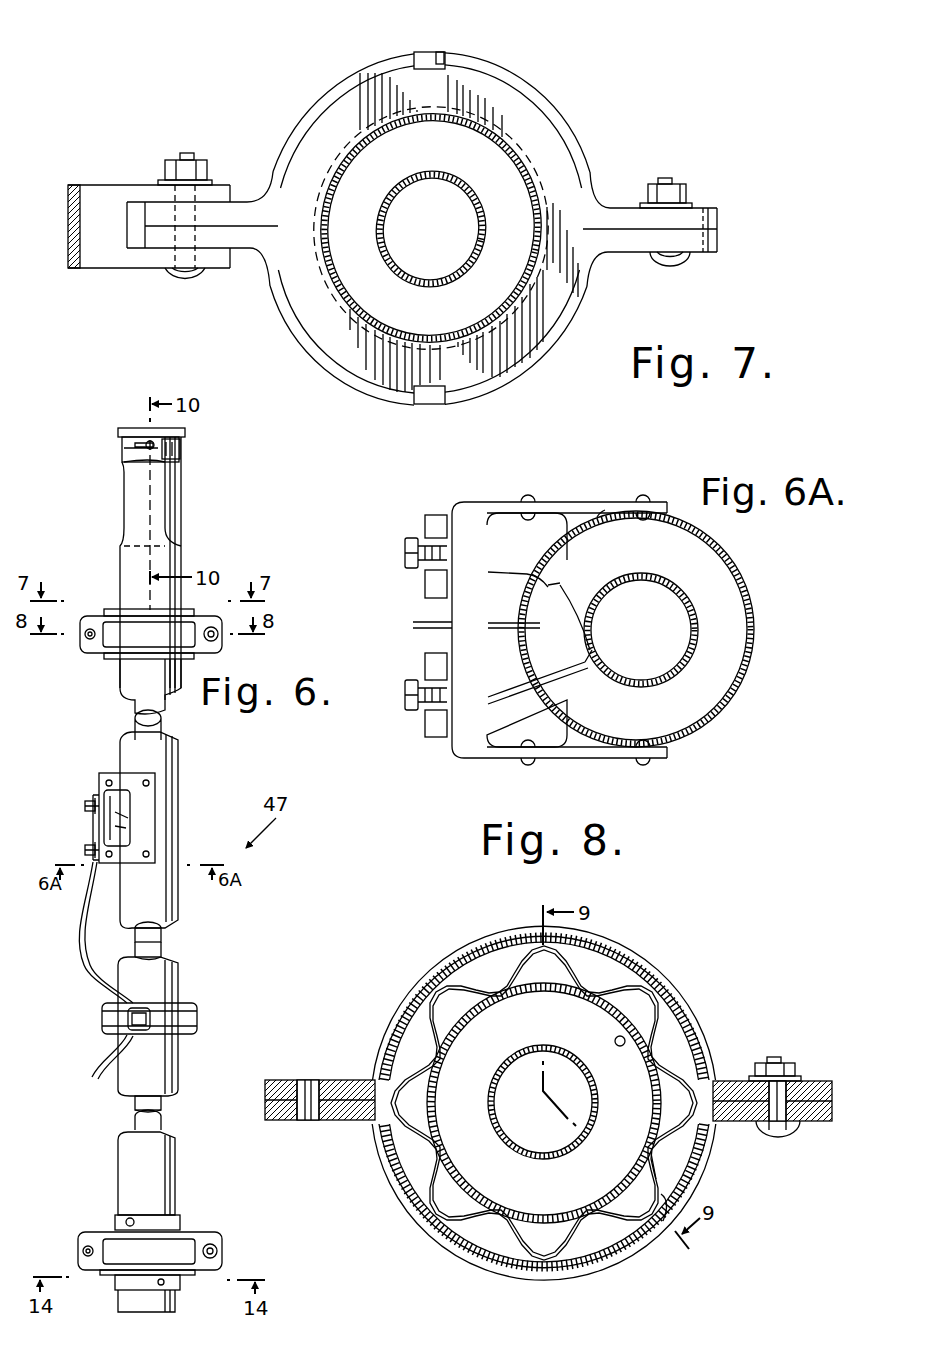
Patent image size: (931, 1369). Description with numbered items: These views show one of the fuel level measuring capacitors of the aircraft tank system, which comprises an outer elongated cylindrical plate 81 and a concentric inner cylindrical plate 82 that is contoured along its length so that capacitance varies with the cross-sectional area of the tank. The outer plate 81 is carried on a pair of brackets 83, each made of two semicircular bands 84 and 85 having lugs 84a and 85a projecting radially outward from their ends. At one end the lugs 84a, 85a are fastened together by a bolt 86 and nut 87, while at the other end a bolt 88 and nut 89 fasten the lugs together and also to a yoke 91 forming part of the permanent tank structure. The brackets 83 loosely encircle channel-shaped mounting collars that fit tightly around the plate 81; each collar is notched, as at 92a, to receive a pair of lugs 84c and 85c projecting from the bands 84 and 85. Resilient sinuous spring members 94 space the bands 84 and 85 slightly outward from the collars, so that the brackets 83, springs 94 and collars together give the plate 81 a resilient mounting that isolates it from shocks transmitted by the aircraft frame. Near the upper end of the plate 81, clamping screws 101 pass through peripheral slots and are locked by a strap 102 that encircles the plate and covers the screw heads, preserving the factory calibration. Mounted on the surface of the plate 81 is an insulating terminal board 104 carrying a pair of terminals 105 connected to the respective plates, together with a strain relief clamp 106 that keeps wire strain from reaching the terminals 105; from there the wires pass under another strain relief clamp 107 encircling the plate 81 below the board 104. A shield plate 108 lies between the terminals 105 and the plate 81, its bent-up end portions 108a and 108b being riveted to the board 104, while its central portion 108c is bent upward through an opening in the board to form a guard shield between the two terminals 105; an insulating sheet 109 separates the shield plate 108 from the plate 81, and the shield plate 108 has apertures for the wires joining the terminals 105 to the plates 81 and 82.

In FIG. 7, the outer cylindrical plate 81 is at (490, 308).
In FIG. 6, the outer cylindrical plate 81 is at (168, 897).
In FIG. 6A, the outer cylindrical plate 81 is at (754, 612).
In FIG. 8, the outer cylindrical plate 81 is at (625, 1040).
In FIG. 7, the inner cylindrical plate 82 is at (462, 185).
In FIG. 6, the inner cylindrical plate 82 is at (158, 946).
In FIG. 6A, the inner cylindrical plate 82 is at (698, 630).
In FIG. 8, the inner cylindrical plate 82 is at (511, 1141).
In FIG. 6, the bracket 83 is at (91, 662).
In FIG. 7, the semicircular band 84 is at (305, 118).
In FIG. 8, the semicircular band 84 is at (409, 991).
In FIG. 7, the lug 84a is at (160, 200).
In FIG. 8, the lug 84a is at (548, 1100).
In FIG. 7, the lug 84c is at (428, 52).
In FIG. 7, the semicircular band 85 is at (302, 330).
In FIG. 8, the semicircular band 85 is at (394, 1201).
In FIG. 7, the lug 85a is at (155, 245).
In FIG. 7, the lug 85c is at (428, 404).
In FIG. 7, the bolt 86 is at (660, 258).
In FIG. 8, the bolt 86 is at (768, 1126).
In FIG. 7, the nut 87 is at (676, 192).
In FIG. 8, the nut 87 is at (790, 1068).
In FIG. 7, the bolt 88 is at (195, 275).
In FIG. 7, the nut 89 is at (200, 160).
In FIG. 7, the yoke 91 is at (92, 233).
In FIG. 7, the notch 92a is at (441, 52).
In FIG. 8, the sinuous spring member 94 is at (570, 969).
In FIG. 6, the clamping screw 101 is at (135, 458).
In FIG. 6, the strap 102 is at (182, 452).
In FIG. 6, the insulating terminal board 104 is at (145, 806).
In FIG. 6, the terminal 105 is at (84, 806).
In FIG. 6A, the terminal 105 is at (405, 542).
In FIG. 6, the strain relief clamp 106 is at (84, 851).
In FIG. 6, the strain relief clamp 107 is at (103, 1020).
In FIG. 6A, the shield plate 108 is at (543, 587).
In FIG. 6A, the bent-up end portion 108a is at (540, 745).
In FIG. 6A, the bent-up end portion 108b is at (584, 490).
In FIG. 6, the central portion 108c is at (96, 793).
In FIG. 6A, the central portion 108c is at (416, 622).
In FIG. 6A, the insulating sheet 109 is at (597, 517).